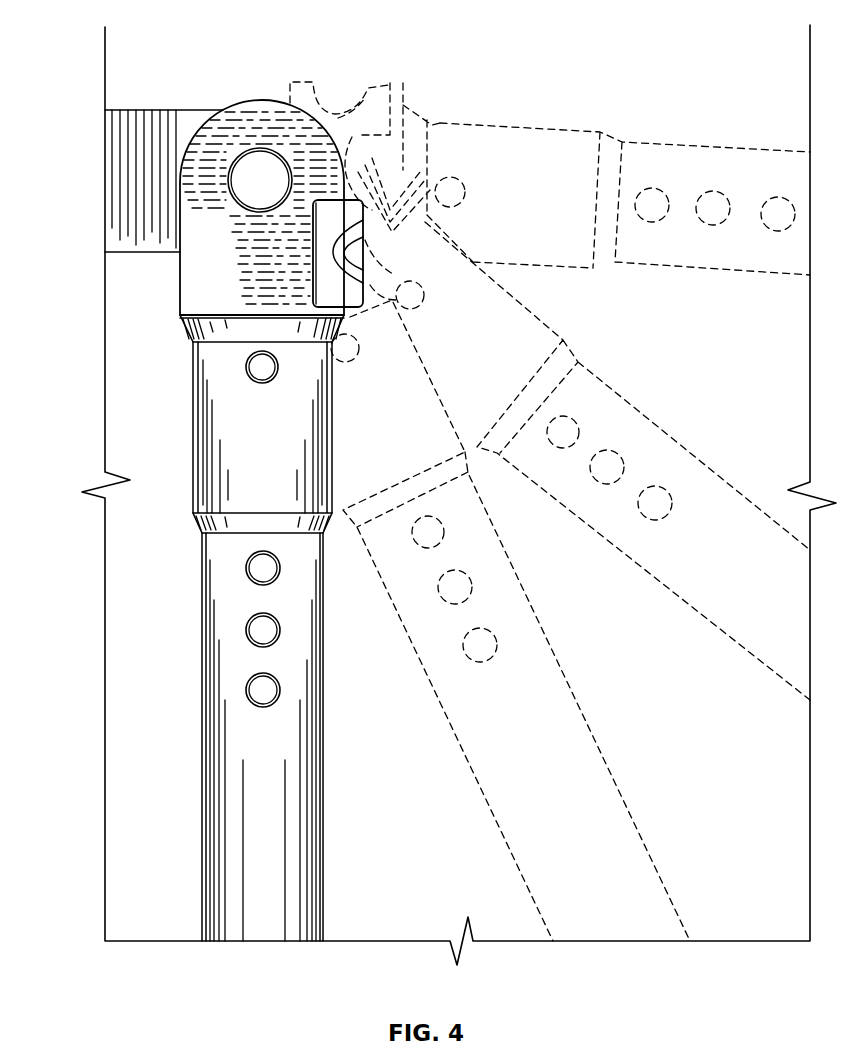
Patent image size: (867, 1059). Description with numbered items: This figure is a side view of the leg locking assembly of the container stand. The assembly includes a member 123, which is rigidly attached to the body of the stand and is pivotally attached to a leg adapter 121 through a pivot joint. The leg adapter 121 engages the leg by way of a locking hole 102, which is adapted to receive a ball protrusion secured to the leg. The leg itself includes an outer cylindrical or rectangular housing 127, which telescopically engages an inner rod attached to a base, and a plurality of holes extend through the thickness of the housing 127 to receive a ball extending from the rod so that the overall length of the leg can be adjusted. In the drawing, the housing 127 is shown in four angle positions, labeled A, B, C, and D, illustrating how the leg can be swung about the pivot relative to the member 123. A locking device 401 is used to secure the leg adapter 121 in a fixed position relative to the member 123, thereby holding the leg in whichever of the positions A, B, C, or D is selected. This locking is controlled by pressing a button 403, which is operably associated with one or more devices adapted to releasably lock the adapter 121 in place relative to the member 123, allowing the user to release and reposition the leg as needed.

The locking hole 102 is at (243, 368).
The leg adapter 121 is at (177, 437).
The member 123 is at (143, 110).
The housing 127 is at (200, 777).
The locking device 401 is at (400, 170).
The button 403 is at (353, 253).
The angle position A is at (249, 737).
The angle position B is at (574, 640).
The angle position C is at (685, 419).
The angle position D is at (698, 129).